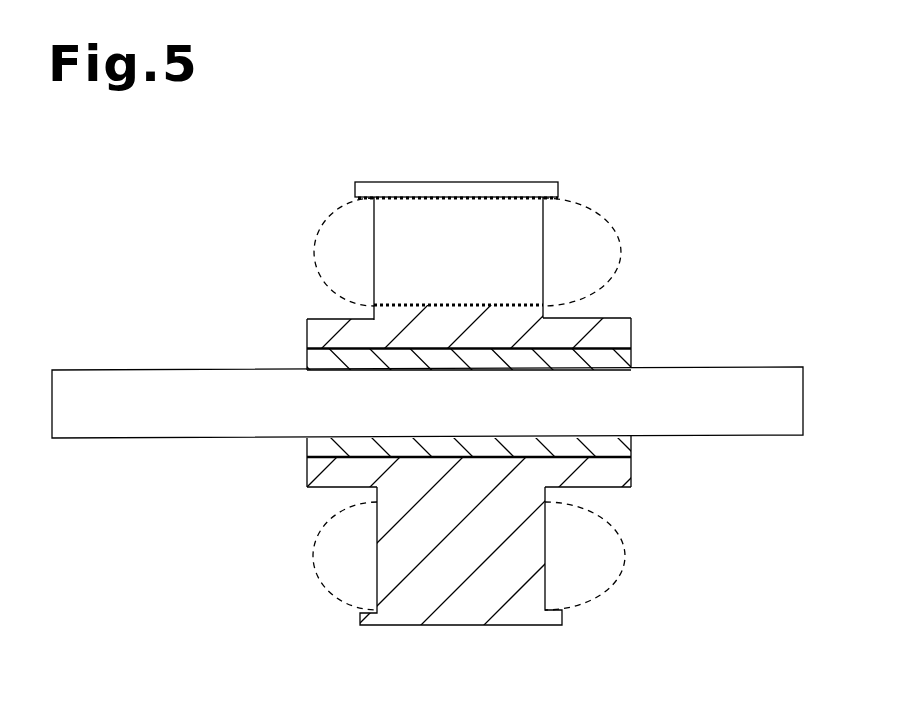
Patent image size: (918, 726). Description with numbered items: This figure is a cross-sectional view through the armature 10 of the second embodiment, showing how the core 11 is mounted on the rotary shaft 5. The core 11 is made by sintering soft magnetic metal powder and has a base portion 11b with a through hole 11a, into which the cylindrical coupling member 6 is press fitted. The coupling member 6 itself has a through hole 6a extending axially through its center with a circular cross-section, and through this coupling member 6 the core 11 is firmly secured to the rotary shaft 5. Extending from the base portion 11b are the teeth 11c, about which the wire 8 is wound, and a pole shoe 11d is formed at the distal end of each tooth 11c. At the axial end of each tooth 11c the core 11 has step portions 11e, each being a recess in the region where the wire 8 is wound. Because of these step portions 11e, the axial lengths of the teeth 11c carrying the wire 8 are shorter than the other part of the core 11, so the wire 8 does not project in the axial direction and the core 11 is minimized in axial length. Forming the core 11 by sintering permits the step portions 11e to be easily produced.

The rotary shaft 5 is at (92, 368).
The coupling member 6 is at (307, 360).
The through hole 6a is at (372, 371).
The wire 8 is at (328, 212).
The armature 10 is at (153, 195).
The core 11 is at (307, 332).
The through hole 11a is at (631, 354).
The base portion 11b is at (632, 332).
The teeth 11c is at (543, 259).
The pole shoe 11d is at (563, 190).
The step portions 11e is at (332, 318).